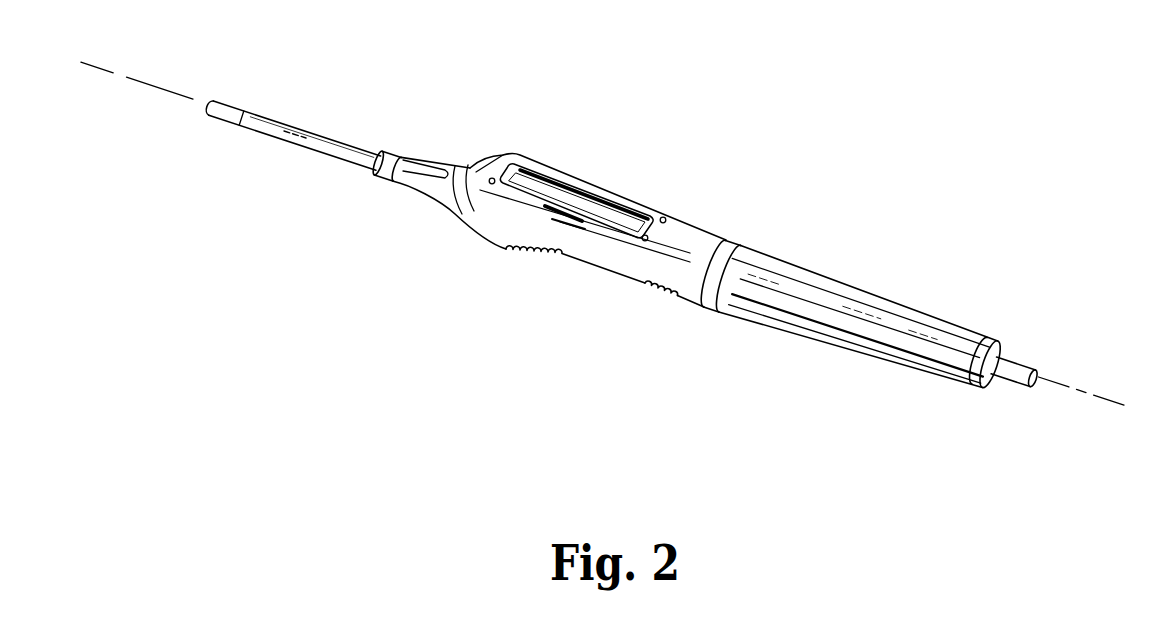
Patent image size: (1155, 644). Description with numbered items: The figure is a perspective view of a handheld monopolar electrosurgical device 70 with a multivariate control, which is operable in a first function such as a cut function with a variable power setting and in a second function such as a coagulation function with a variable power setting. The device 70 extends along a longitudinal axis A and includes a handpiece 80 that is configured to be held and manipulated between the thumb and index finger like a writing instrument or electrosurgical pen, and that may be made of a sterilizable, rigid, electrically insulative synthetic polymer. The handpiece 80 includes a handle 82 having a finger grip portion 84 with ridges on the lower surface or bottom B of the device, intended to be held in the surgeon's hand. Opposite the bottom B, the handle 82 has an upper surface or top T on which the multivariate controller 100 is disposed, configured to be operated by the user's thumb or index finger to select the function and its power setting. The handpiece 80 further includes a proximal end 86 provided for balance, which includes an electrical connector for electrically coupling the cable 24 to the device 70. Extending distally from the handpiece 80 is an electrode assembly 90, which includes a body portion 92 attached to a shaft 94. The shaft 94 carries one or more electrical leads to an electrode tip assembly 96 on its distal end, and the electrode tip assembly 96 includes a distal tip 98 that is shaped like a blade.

The cable 24 is at (1015, 398).
The monopolar electrosurgical device 70 is at (766, 277).
The handpiece 80 is at (753, 230).
The handle 82 is at (713, 240).
The finger grip portion 84 is at (613, 272).
The proximal end 86 is at (997, 310).
The electrode assembly 90 is at (326, 143).
The body portion 92 is at (420, 162).
The shaft 94 is at (264, 93).
The electrode tip assembly 96 is at (206, 93).
The distal tip 98 is at (206, 107).
The multivariate controller 100 is at (564, 172).
The top T is at (688, 223).
The bottom B is at (678, 312).
The longitudinal axis A is at (1067, 388).